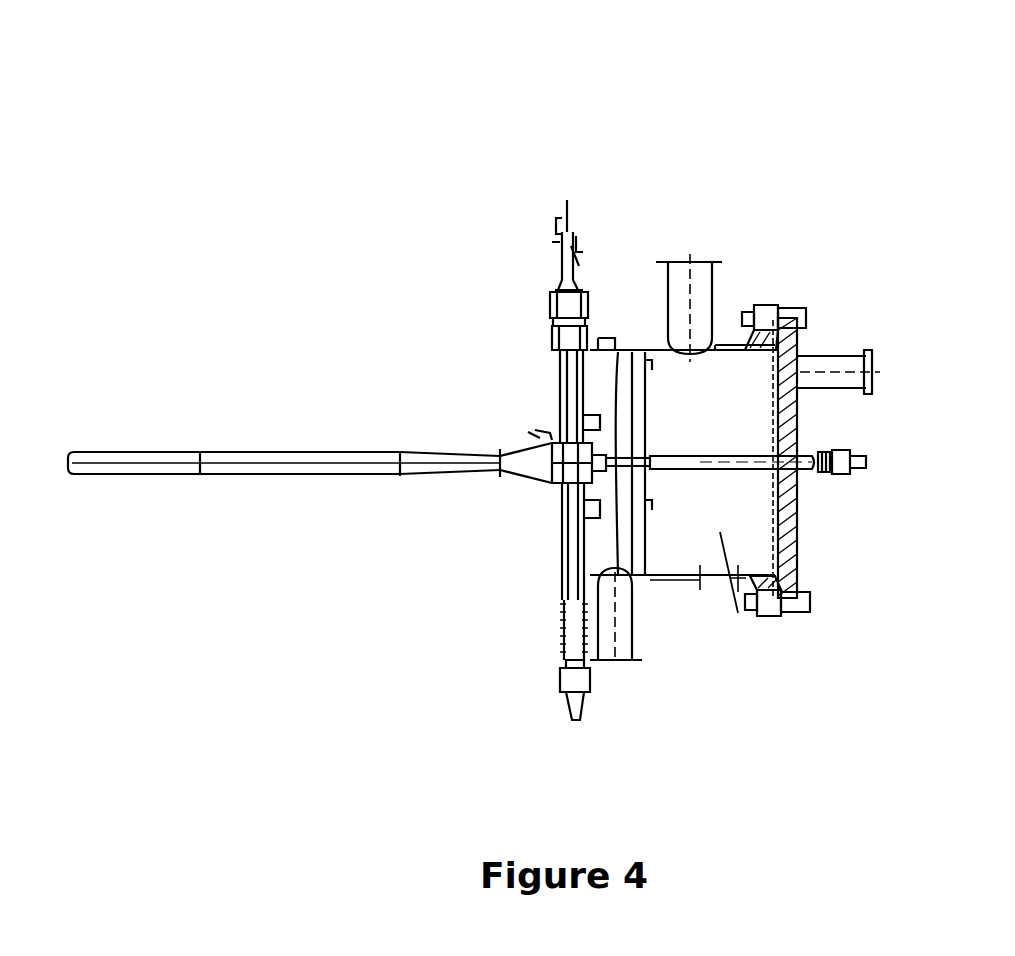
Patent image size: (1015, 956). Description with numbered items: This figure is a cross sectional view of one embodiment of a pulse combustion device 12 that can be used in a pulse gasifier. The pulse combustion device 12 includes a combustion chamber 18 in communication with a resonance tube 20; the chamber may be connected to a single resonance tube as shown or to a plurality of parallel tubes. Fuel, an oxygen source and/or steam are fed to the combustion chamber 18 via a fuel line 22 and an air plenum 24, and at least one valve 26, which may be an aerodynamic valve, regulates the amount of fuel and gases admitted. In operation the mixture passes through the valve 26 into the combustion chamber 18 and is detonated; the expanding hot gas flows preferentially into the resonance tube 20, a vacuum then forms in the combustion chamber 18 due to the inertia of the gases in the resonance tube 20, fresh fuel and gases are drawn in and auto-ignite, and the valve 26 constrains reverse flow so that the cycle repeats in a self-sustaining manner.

The pulse combustion device 12 is at (776, 130).
The combustion chamber 18 is at (560, 442).
The resonance tube 20 is at (242, 476).
The fuel line 22 is at (866, 462).
The air plenum 24 is at (790, 532).
The valve 26 is at (627, 346).